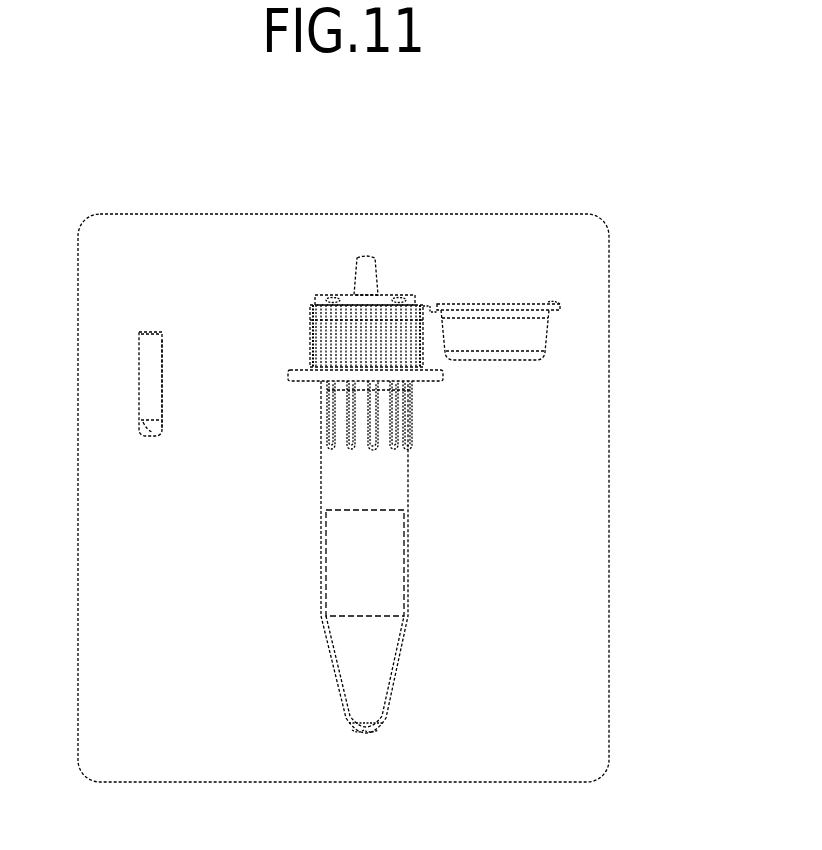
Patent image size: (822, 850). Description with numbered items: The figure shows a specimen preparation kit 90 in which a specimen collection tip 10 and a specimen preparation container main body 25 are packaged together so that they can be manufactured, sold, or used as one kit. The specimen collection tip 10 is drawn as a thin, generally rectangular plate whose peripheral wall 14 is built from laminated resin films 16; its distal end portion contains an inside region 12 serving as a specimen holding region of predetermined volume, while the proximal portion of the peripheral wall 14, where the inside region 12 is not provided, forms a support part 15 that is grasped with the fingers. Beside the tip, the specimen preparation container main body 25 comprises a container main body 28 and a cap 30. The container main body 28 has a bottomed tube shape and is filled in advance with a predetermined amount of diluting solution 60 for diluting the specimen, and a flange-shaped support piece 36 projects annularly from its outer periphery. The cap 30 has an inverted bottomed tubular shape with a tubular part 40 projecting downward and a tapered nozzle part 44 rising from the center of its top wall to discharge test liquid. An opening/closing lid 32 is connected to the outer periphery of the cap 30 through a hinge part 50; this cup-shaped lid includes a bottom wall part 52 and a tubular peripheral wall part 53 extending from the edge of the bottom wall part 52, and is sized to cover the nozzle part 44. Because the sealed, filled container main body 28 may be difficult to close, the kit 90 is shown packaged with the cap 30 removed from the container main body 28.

The specimen collection tip 10 is at (133, 372).
The inside region 12 is at (141, 427).
The peripheral wall 14 is at (170, 398).
The support part 15 is at (166, 350).
The resin film 16 is at (150, 342).
The specimen preparation container main body 25 is at (410, 335).
The container main body 28 is at (386, 557).
The cap 30 is at (327, 320).
The opening/closing lid 32 is at (513, 370).
The support piece 36 is at (297, 382).
The tubular part 40 is at (334, 340).
The nozzle part 44 is at (379, 266).
The hinge part 50 is at (428, 304).
The bottom wall part 52 is at (494, 360).
The tubular peripheral wall part 53 is at (538, 340).
The diluting solution 60 is at (343, 582).
The specimen preparation kit 90 is at (603, 198).